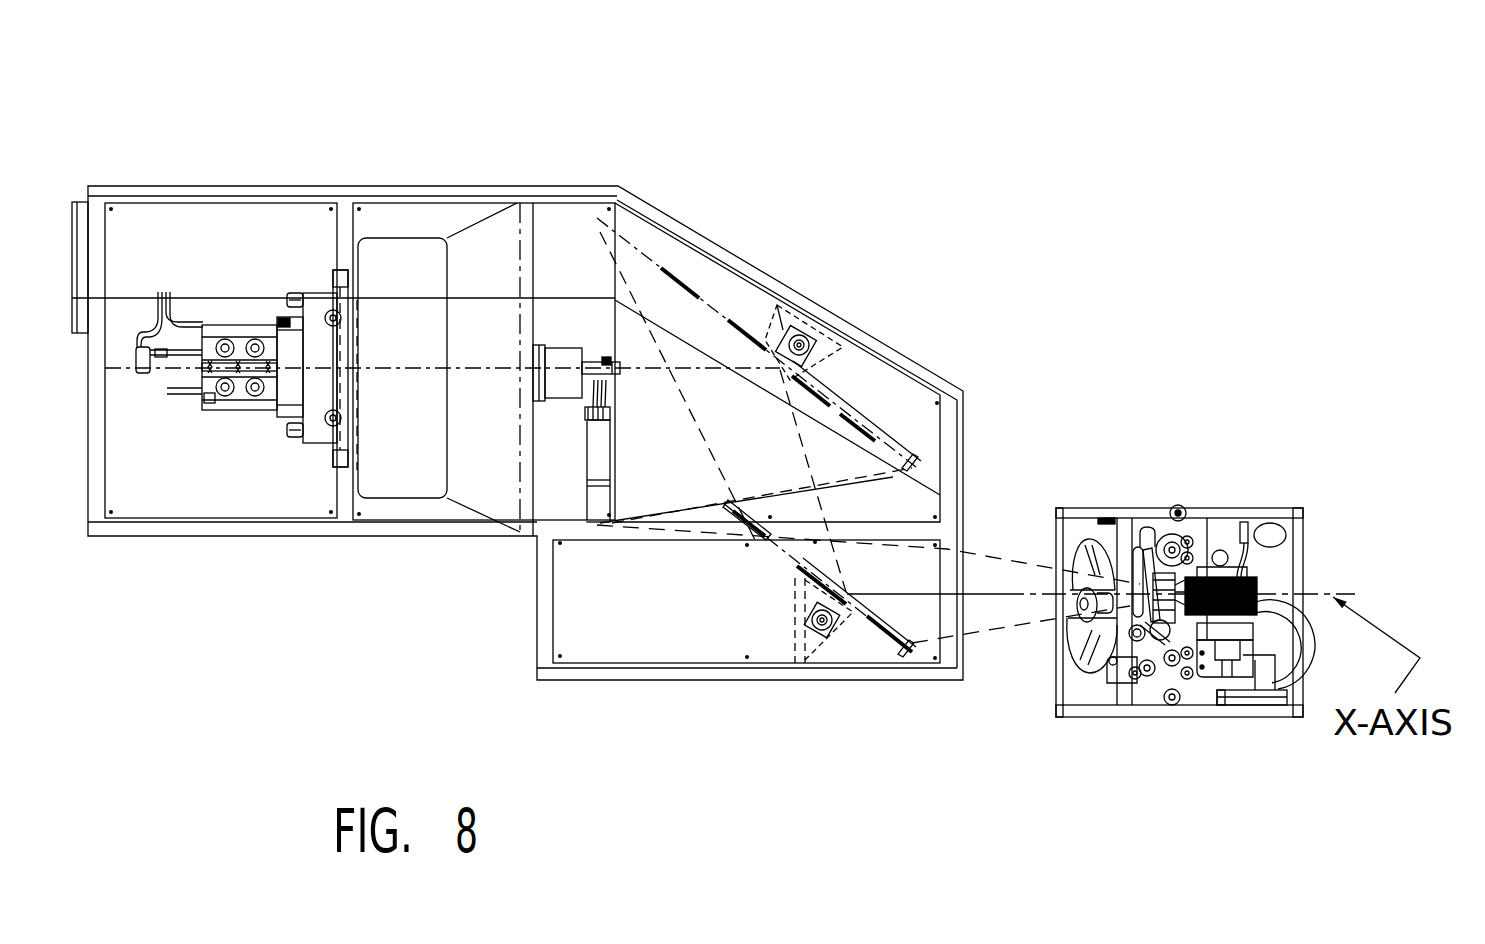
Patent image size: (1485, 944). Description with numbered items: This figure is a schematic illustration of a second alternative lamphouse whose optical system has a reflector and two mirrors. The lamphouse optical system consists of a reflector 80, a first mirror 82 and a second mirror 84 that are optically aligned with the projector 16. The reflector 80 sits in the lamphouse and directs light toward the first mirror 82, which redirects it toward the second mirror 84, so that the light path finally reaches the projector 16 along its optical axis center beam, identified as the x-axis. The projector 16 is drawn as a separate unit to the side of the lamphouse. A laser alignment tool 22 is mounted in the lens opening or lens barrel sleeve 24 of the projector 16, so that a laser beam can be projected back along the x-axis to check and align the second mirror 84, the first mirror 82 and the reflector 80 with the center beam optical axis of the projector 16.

The projector 16 is at (1219, 568).
The laser alignment tool 22 is at (1308, 551).
The lens barrel sleeve 24 is at (1313, 712).
The reflector 80 is at (462, 309).
The first mirror 82 is at (817, 344).
The second mirror 84 is at (819, 665).